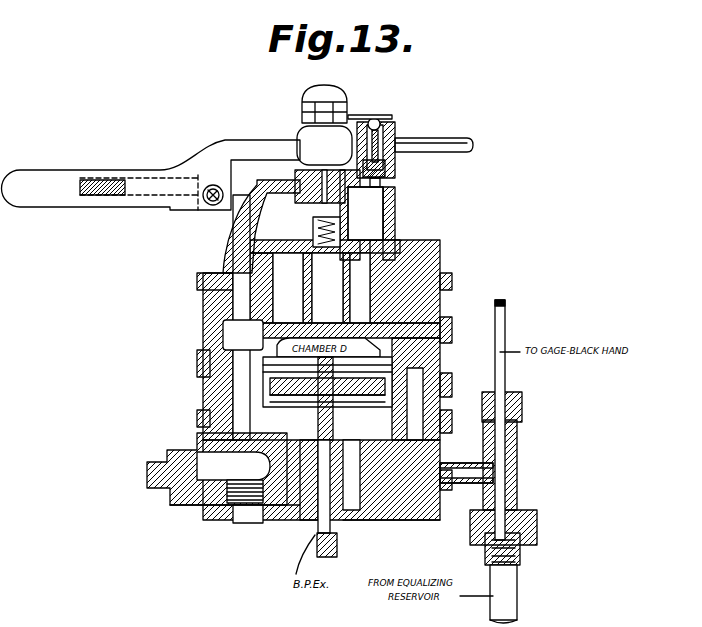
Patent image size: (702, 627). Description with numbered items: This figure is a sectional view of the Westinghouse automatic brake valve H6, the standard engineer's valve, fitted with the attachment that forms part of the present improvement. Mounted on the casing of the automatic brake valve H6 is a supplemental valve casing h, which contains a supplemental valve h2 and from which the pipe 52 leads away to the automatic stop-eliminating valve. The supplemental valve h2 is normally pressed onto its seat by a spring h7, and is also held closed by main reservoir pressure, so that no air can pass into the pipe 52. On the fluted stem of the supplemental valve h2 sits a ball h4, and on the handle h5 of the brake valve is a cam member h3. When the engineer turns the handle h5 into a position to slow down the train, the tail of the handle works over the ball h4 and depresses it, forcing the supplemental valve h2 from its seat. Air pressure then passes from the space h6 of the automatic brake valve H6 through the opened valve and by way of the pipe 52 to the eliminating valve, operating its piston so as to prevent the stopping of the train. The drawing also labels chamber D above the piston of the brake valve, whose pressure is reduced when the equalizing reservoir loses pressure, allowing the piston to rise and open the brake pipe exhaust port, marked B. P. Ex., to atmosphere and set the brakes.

The handle h5 is at (60, 175).
The automatic brake valve H6 is at (230, 240).
The supplemental valve casing h is at (395, 157).
The supplemental valve h2 is at (393, 170).
The cam member h3 is at (375, 118).
The ball h4 is at (392, 121).
The space h6 is at (367, 203).
The spring h7 is at (390, 182).
The pipe 52 is at (460, 142).